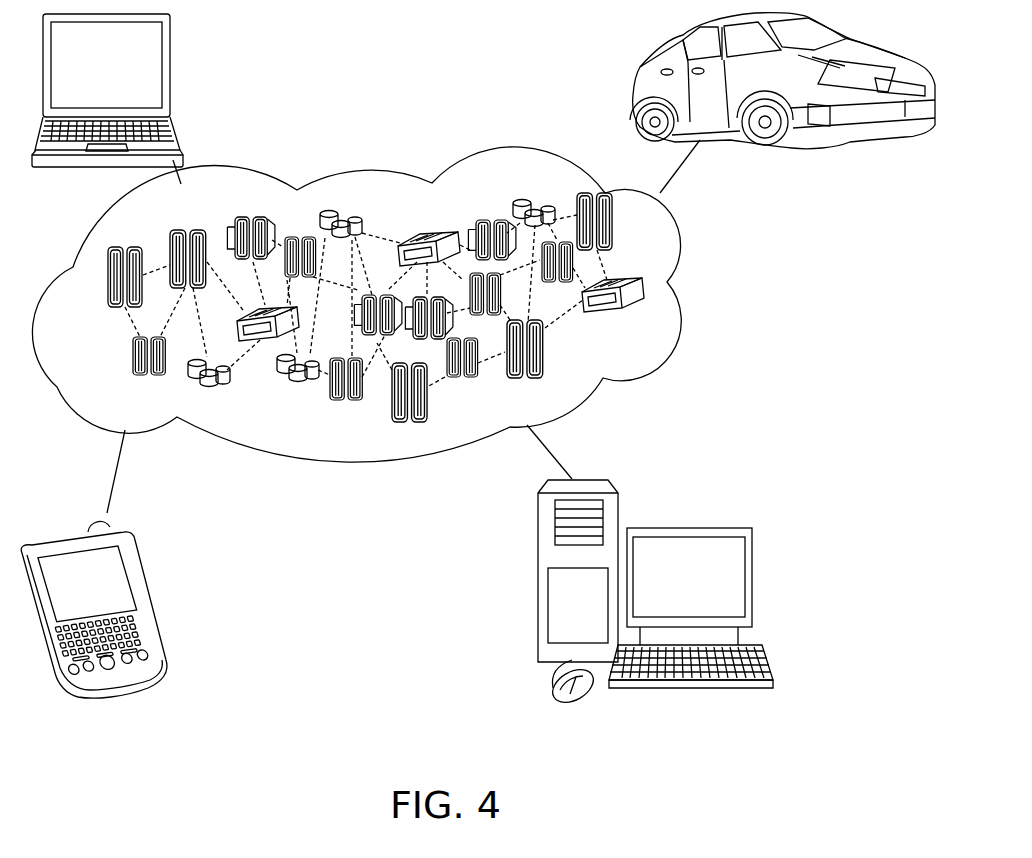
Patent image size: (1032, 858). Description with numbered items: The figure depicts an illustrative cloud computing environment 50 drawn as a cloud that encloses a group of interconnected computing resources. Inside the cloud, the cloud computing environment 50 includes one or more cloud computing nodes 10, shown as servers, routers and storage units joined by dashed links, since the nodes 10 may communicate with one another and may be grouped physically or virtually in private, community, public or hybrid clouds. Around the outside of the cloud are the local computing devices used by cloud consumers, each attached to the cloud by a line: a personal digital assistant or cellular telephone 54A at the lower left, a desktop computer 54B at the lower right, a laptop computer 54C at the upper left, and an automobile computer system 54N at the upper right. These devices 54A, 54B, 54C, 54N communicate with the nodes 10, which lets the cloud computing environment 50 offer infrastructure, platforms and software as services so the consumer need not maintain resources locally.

The cloud computing nodes 10 is at (657, 333).
The cloud computing environment 50 is at (710, 235).
The personal digital assistant (PDA) or cellular telephone 54A is at (140, 576).
The desktop computer 54B is at (752, 578).
The laptop computer 54C is at (172, 68).
The automobile computer system 54N is at (820, 35).